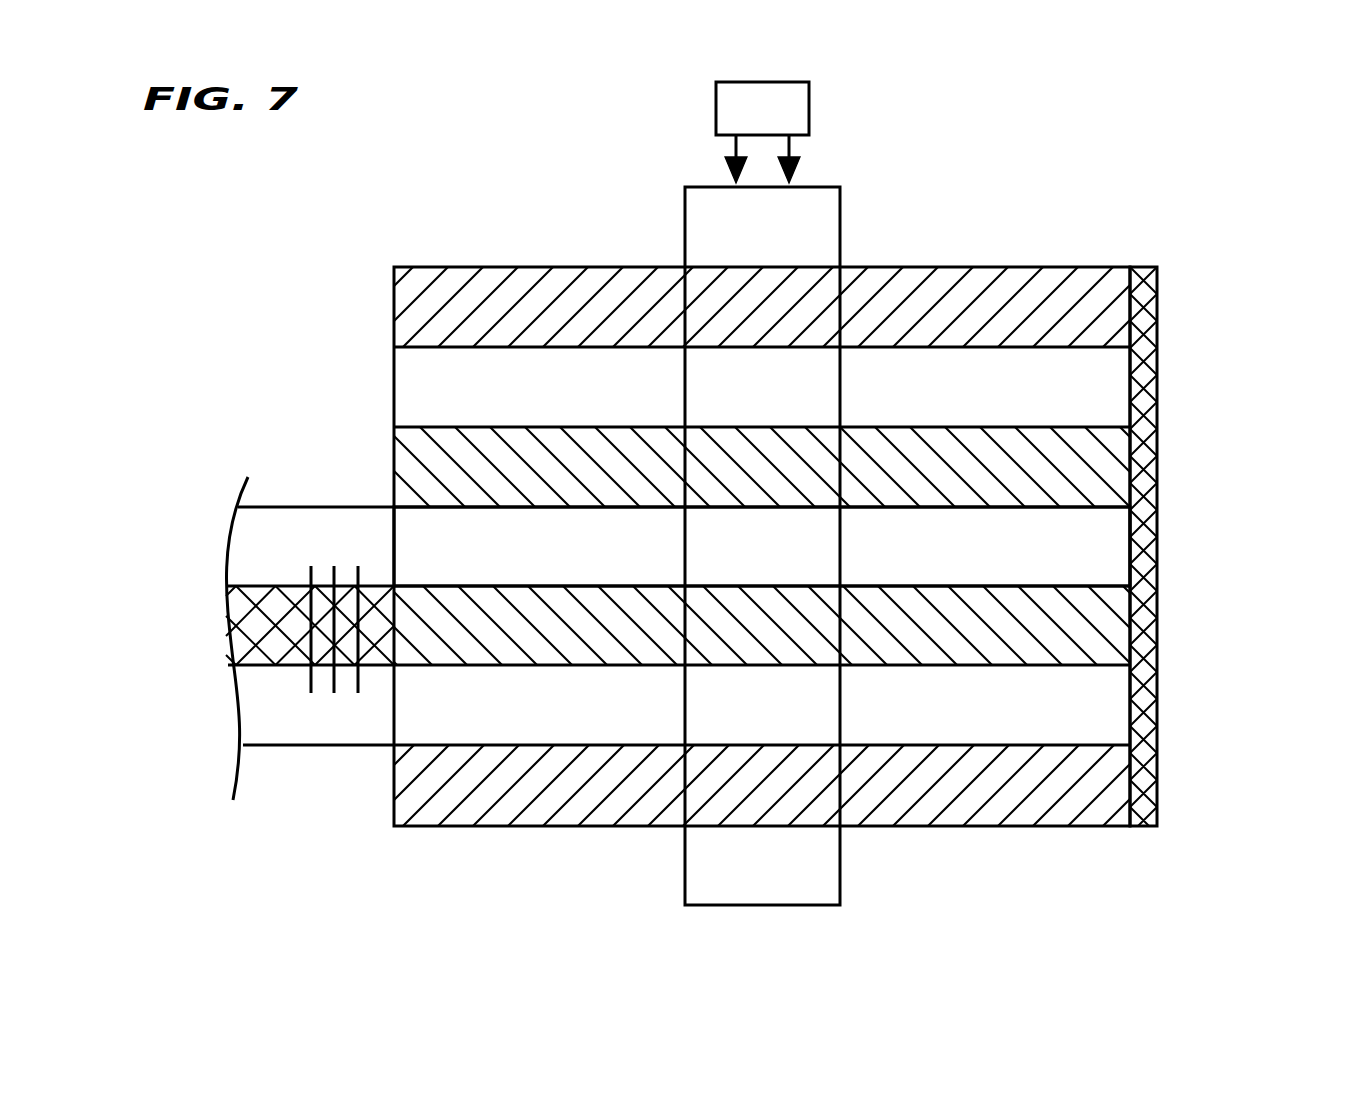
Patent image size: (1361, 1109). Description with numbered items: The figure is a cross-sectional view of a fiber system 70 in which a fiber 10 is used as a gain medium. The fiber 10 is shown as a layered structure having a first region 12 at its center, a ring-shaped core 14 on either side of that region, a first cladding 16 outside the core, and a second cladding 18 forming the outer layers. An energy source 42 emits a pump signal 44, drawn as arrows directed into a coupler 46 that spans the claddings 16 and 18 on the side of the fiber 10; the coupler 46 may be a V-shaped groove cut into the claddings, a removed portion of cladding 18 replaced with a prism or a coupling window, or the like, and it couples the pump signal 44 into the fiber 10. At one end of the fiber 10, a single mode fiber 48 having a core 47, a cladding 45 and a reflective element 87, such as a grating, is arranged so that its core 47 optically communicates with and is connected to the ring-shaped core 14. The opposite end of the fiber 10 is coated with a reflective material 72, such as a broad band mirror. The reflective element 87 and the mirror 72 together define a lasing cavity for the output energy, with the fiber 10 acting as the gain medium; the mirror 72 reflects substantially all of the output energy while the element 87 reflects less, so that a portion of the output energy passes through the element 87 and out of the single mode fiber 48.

The fiber 10 is at (513, 185).
The first region 12 is at (1110, 555).
The ring-shaped core 14 is at (435, 462).
The first cladding 16 is at (447, 388).
The second cladding 18 is at (408, 293).
The energy source 42 is at (782, 125).
The pump signal 44 is at (792, 141).
The coupler 46 is at (825, 237).
The cladding 45 is at (292, 722).
The core 47 is at (262, 651).
The single mode fiber 48 is at (172, 596).
The fiber system 70 is at (1233, 875).
The reflective material 72 is at (1143, 272).
The reflective element 87 is at (292, 567).